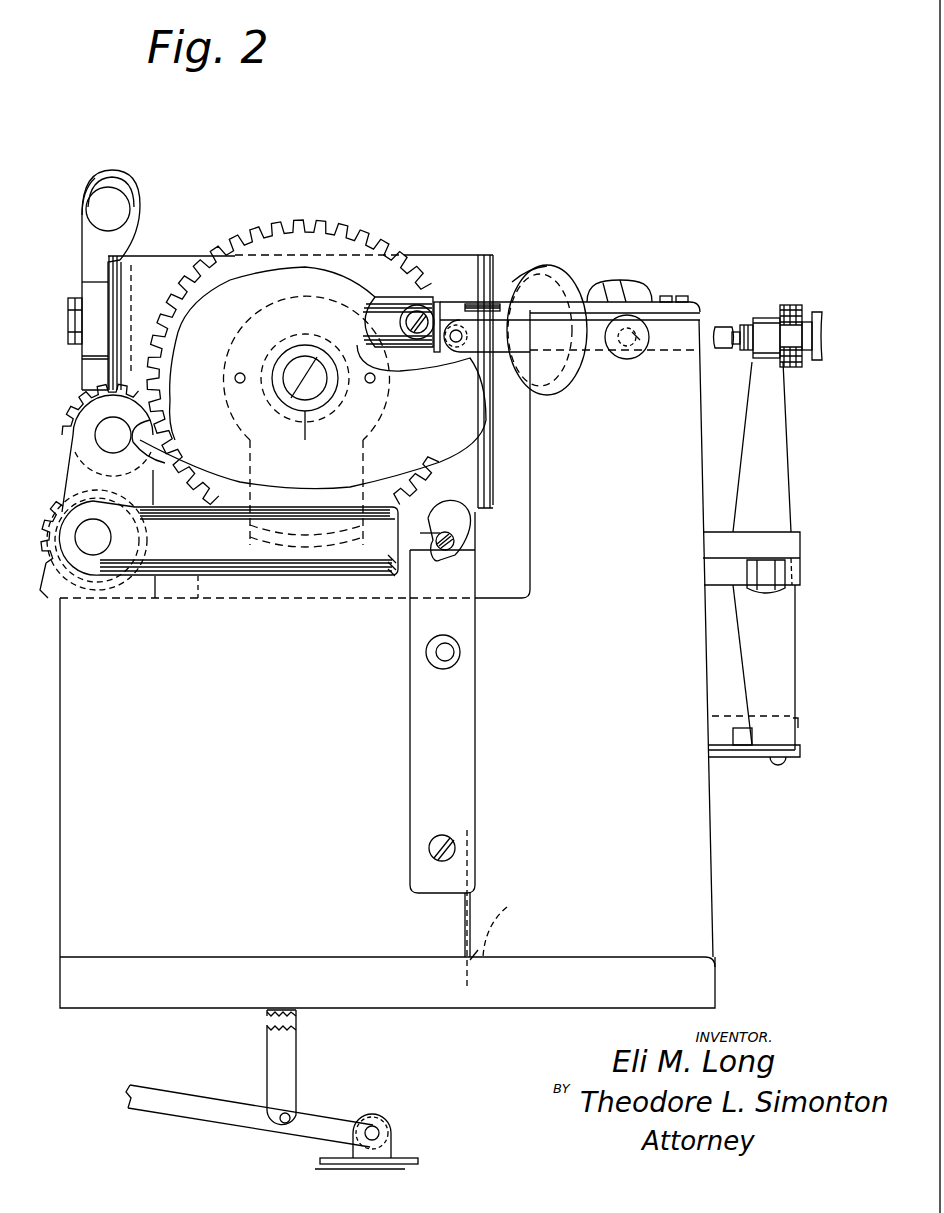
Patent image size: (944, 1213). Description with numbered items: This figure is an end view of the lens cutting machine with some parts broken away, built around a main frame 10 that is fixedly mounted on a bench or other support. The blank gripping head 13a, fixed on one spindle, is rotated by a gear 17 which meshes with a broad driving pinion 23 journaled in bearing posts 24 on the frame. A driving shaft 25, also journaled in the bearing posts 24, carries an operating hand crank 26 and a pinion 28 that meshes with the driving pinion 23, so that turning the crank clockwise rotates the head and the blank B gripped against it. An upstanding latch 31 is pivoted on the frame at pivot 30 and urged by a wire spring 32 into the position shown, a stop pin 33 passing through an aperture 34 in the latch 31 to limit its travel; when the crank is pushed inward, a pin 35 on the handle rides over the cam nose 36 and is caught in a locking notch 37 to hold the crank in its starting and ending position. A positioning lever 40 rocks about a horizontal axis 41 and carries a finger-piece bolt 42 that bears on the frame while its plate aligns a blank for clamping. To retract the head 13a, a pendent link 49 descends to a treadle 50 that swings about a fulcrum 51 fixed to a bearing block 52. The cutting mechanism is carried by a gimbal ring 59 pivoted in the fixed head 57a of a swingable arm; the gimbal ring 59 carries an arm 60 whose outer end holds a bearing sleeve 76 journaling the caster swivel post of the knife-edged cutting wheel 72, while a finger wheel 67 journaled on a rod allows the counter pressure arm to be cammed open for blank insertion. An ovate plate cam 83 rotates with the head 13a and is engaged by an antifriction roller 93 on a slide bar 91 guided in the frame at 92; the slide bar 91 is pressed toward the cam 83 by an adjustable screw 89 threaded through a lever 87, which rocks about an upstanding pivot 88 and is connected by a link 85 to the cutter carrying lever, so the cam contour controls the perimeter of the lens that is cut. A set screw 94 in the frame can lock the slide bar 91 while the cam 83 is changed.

The main frame 10 is at (145, 908).
The blank gripping head 13a is at (228, 334).
The gear 17 is at (310, 240).
The driving pinion 23 is at (103, 422).
The bearing post 24 is at (82, 449).
The driving shaft 25 is at (95, 540).
The operating hand crank 26 is at (192, 512).
The pinion 28 is at (56, 595).
The pivot 30 is at (432, 845).
The latch 31 is at (422, 720).
The wire spring 32 is at (470, 920).
The stop pin 33 is at (452, 653).
The aperture 34 is at (432, 666).
The pin 35 is at (432, 558).
The cam nose 36 is at (432, 515).
The slot 37 is at (455, 547).
The lever 40 is at (93, 247).
The horizontal axis 41 is at (73, 333).
The bolt 42 is at (115, 208).
The pendent link 49 is at (300, 1013).
The treadle 50 is at (197, 1097).
The fulcrum 51 is at (373, 1133).
The bearing block 52 is at (397, 1160).
The fixed head 57a is at (630, 280).
The gimbal ring 59 is at (670, 300).
The arm 60 is at (398, 293).
The finger wheel 67 is at (540, 266).
The cutting wheel 72 is at (446, 304).
The bearing sleeve 76 is at (448, 350).
The plate cam 83 is at (265, 270).
The link 85 is at (720, 748).
The lever 87 is at (748, 443).
The pivot 88 is at (763, 588).
The adjustable screw 89 is at (745, 322).
The slide bar 91 is at (515, 354).
The guide 92 is at (603, 320).
The antifriction roller 93 is at (487, 295).
The set screw 94 is at (637, 346).
The blank B is at (157, 272).